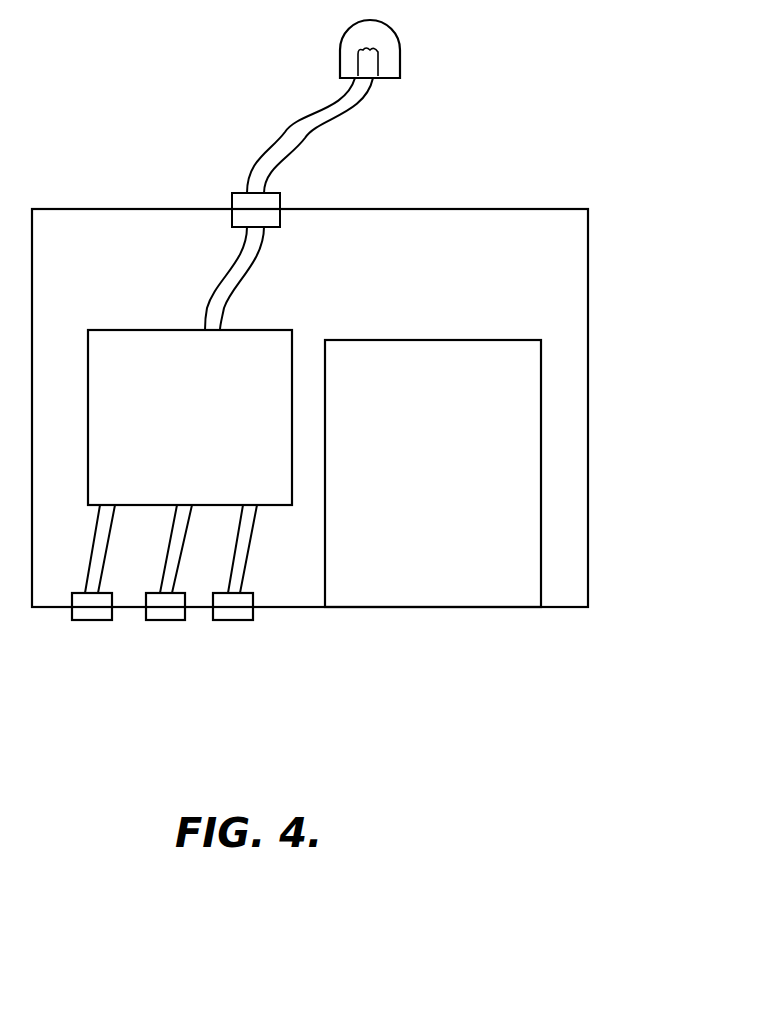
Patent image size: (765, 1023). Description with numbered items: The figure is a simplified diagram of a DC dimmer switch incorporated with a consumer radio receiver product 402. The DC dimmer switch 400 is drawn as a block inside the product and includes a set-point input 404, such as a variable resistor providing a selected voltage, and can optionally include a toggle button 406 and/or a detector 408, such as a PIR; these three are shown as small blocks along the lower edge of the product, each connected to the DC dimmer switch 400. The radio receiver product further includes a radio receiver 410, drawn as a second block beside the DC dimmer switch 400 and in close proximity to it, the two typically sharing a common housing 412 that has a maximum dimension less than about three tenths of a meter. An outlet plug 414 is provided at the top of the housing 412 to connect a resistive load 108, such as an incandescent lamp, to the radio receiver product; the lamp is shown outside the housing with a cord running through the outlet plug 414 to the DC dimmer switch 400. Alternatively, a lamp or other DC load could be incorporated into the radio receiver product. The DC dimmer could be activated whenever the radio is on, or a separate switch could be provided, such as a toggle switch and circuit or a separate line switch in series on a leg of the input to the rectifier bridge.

The resistive load 108 is at (396, 38).
The DC dimmer switch 400 is at (132, 328).
The consumer radio receiver product 402 is at (515, 187).
The set-point input 404 is at (88, 620).
The toggle button 406 is at (160, 620).
The detector 408 is at (232, 620).
The radio receiver 410 is at (533, 338).
The common housing 412 is at (590, 259).
The outlet plug 414 is at (282, 207).